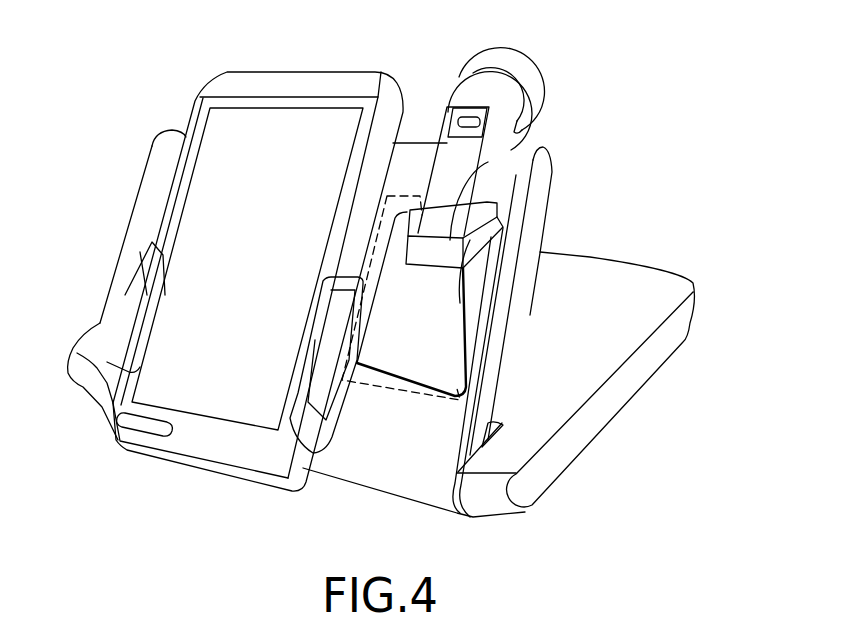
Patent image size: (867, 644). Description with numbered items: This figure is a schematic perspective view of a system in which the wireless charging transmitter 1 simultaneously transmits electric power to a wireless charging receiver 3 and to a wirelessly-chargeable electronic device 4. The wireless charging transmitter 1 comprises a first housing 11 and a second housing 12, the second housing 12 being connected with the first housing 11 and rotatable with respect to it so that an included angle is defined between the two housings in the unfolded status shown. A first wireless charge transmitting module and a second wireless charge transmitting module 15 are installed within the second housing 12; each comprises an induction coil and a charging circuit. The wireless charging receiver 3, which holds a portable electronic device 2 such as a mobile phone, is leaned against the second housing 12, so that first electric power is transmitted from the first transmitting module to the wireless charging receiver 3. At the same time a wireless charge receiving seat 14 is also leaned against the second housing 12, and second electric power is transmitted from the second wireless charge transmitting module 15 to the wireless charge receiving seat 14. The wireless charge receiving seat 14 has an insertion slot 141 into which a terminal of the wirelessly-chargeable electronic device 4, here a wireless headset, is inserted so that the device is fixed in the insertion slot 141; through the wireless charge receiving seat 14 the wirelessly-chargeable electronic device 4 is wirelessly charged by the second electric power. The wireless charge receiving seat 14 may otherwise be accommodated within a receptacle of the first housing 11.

The wireless charging transmitter 1 is at (473, 340).
The first housing 11 is at (632, 373).
The second housing 12 is at (402, 465).
The wireless charge receiving seat 14 is at (510, 240).
The insertion slot 141 is at (490, 163).
The second wireless charge transmitting module 15 is at (377, 390).
The portable electronic device 2 is at (261, 84).
The wireless charging receiver 3 is at (130, 312).
The wirelessly-chargeable electronic device 4 is at (508, 97).